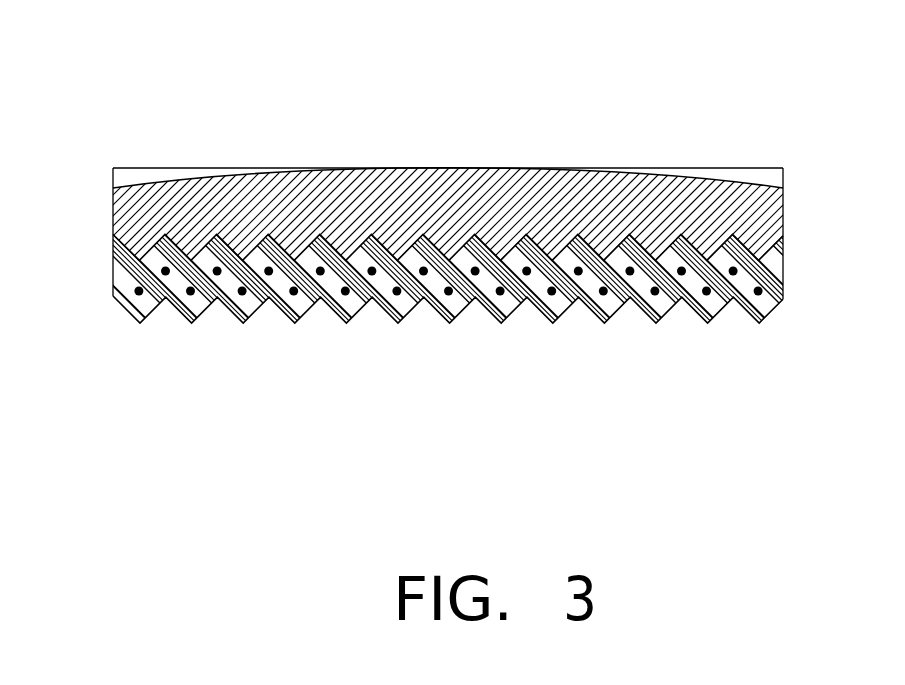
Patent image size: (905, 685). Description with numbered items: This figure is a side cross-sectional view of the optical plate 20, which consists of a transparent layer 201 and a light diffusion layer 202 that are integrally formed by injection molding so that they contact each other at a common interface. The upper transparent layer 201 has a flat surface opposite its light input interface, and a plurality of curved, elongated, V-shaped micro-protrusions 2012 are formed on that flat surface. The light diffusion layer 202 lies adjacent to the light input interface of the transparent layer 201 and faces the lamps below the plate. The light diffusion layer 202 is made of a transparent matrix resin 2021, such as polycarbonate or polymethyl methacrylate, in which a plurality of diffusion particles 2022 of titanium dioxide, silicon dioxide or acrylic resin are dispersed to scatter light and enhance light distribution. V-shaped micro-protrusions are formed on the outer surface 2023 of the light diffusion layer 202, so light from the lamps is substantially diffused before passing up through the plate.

The optical plate 20 is at (458, 211).
The transparent layer 201 is at (445, 195).
The curved, elongated, V-shaped micro-protrusions 2012 is at (660, 183).
The light diffusion layer 202 is at (480, 313).
The transparent matrix resin 2021 is at (465, 303).
The diffusion particles 2022 is at (612, 308).
The outer surface 2023 is at (758, 317).